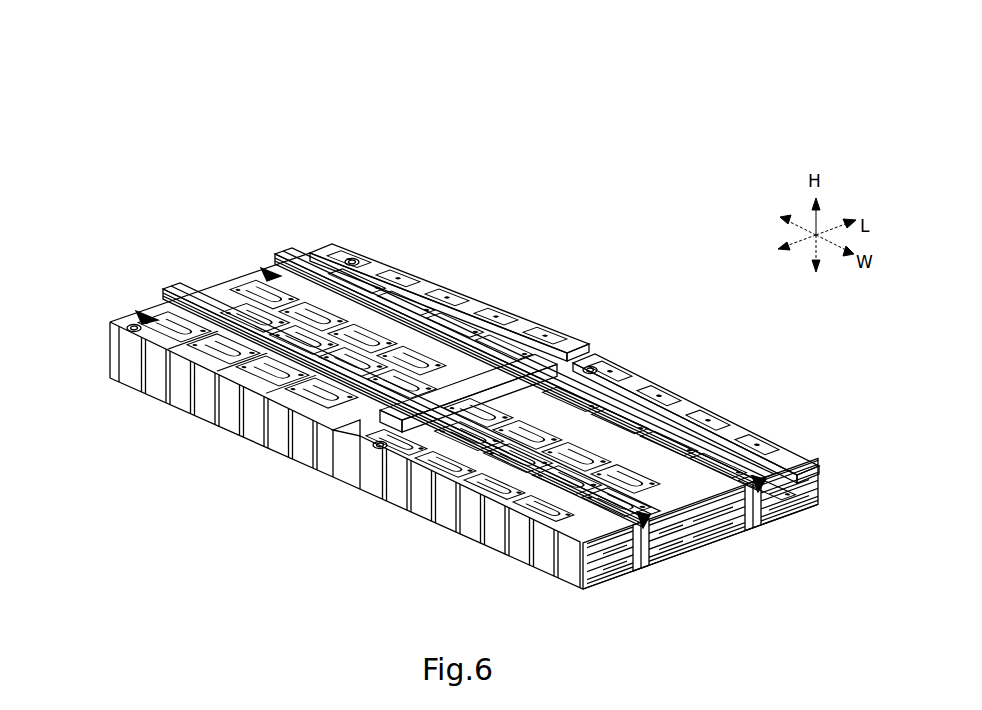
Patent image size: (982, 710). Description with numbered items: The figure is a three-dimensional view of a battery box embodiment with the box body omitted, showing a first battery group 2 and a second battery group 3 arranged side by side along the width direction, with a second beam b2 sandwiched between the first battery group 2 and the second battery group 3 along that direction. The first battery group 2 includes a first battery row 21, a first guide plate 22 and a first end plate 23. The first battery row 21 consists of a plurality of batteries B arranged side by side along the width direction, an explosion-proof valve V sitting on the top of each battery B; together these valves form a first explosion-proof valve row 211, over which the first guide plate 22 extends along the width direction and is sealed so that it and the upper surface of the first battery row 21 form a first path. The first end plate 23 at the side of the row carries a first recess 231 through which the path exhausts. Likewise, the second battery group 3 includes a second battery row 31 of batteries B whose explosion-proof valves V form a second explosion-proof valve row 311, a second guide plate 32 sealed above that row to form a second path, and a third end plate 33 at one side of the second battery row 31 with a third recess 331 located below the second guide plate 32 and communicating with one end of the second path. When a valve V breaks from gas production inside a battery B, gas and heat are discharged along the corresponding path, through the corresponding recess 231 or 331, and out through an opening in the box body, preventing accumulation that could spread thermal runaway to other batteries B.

The first battery group 2 is at (80, 28).
The first battery row 21 is at (688, 578).
The first explosion-proof valve row 211 is at (817, 517).
The first guide plate 22 is at (664, 350).
The first end plate 23 is at (856, 478).
The first recess 231 is at (787, 527).
The second battery group 3 is at (214, 28).
The second battery row 31 is at (140, 314).
The second explosion-proof valve row 311 is at (150, 314).
The second guide plate 32 is at (423, 238).
The third end plate 33 is at (95, 398).
The third recess 331 is at (165, 292).
The battery B is at (180, 392).
The explosion-proof valve V is at (255, 360).
The second beam b2 is at (347, 463).